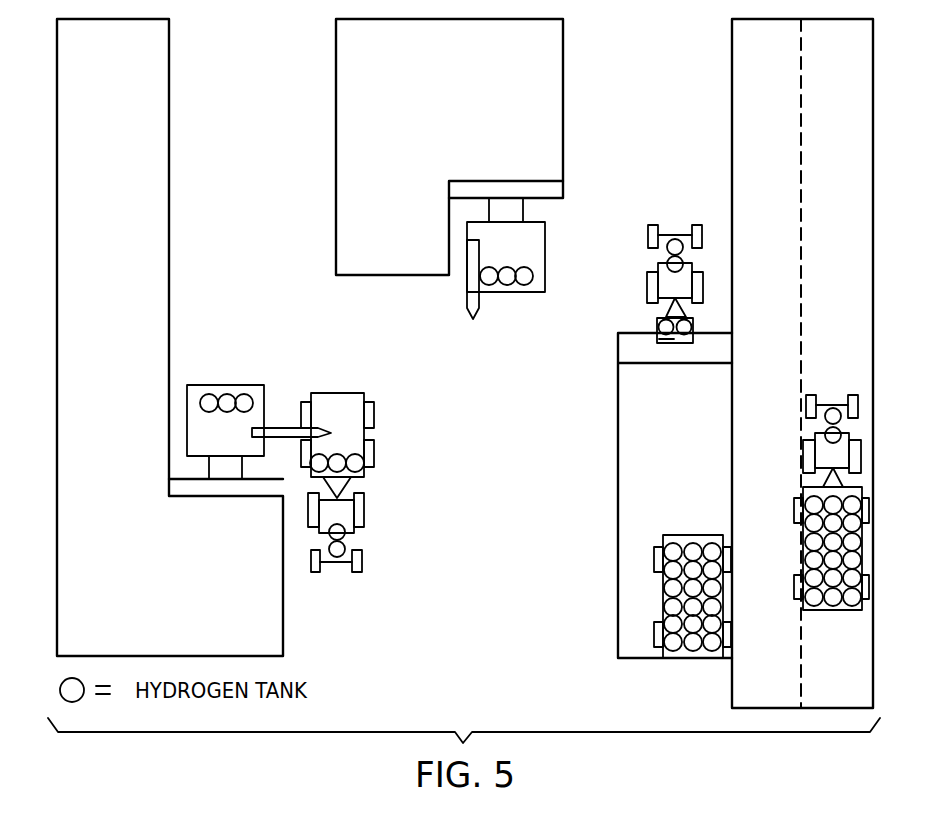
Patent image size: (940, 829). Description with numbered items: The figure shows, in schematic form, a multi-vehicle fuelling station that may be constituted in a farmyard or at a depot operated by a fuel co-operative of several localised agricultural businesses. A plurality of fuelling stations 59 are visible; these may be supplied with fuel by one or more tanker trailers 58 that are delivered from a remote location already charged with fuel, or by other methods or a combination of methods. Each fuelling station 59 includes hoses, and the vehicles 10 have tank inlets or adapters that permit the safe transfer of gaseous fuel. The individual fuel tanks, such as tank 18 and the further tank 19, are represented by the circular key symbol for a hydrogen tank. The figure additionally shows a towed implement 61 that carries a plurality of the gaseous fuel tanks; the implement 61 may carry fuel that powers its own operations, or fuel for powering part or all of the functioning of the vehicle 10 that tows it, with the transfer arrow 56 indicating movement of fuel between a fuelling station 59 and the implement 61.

The vehicle 10 is at (337, 565).
The tank 18 is at (337, 549).
The hydrogen tank 19 is at (337, 530).
The hydrogen tank transfer arrow 56 is at (283, 432).
The tanker trailer 58 is at (685, 540).
The fuelling station 59 is at (199, 423).
The towed implement 61 is at (340, 403).